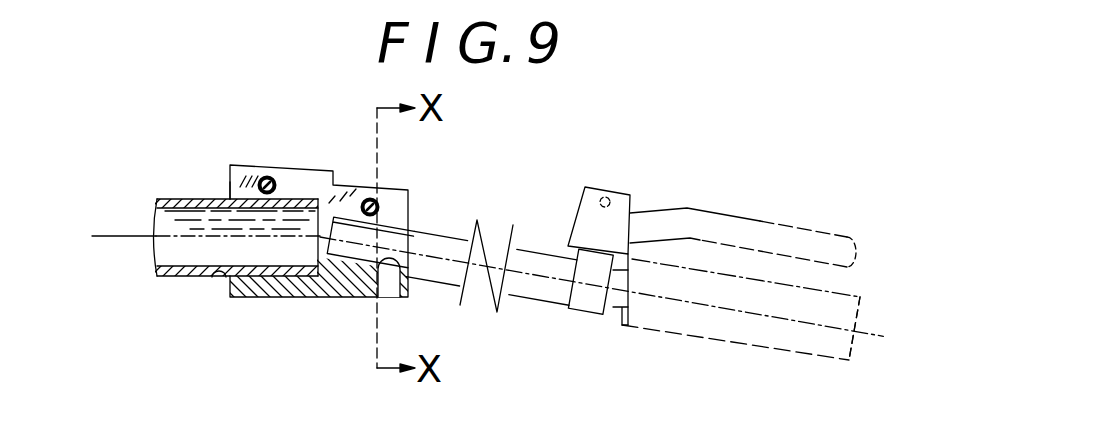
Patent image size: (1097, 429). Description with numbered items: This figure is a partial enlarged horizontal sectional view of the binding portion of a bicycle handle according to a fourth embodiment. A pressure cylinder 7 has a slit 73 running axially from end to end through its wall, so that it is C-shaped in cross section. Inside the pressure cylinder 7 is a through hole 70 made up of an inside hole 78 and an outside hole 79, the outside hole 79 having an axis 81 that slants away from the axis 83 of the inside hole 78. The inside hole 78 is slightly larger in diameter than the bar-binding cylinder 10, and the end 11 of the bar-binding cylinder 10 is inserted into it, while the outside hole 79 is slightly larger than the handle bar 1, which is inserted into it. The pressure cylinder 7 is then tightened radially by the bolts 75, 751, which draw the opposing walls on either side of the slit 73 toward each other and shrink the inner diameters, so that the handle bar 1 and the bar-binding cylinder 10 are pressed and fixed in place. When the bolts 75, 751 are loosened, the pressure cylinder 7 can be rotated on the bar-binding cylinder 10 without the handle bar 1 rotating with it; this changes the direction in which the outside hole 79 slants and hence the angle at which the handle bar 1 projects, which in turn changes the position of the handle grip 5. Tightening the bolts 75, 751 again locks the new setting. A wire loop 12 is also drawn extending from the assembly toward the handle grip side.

The handle bar 1 is at (517, 295).
The handle grip 5 is at (754, 332).
The pressure cylinder 7 is at (272, 298).
The bar-binding cylinder 10 is at (180, 278).
The end of the bar-binding cylinder 11 is at (238, 198).
The wire 12 is at (766, 233).
The through hole 70 is at (371, 268).
The slit 73 is at (393, 210).
The bolt 75 is at (367, 198).
The inside hole 78 is at (400, 297).
The outside hole 79 is at (217, 281).
The axis of the outside hole 81 is at (868, 322).
The axis of the inside hole 83 is at (113, 233).
The bolt 751 is at (266, 177).